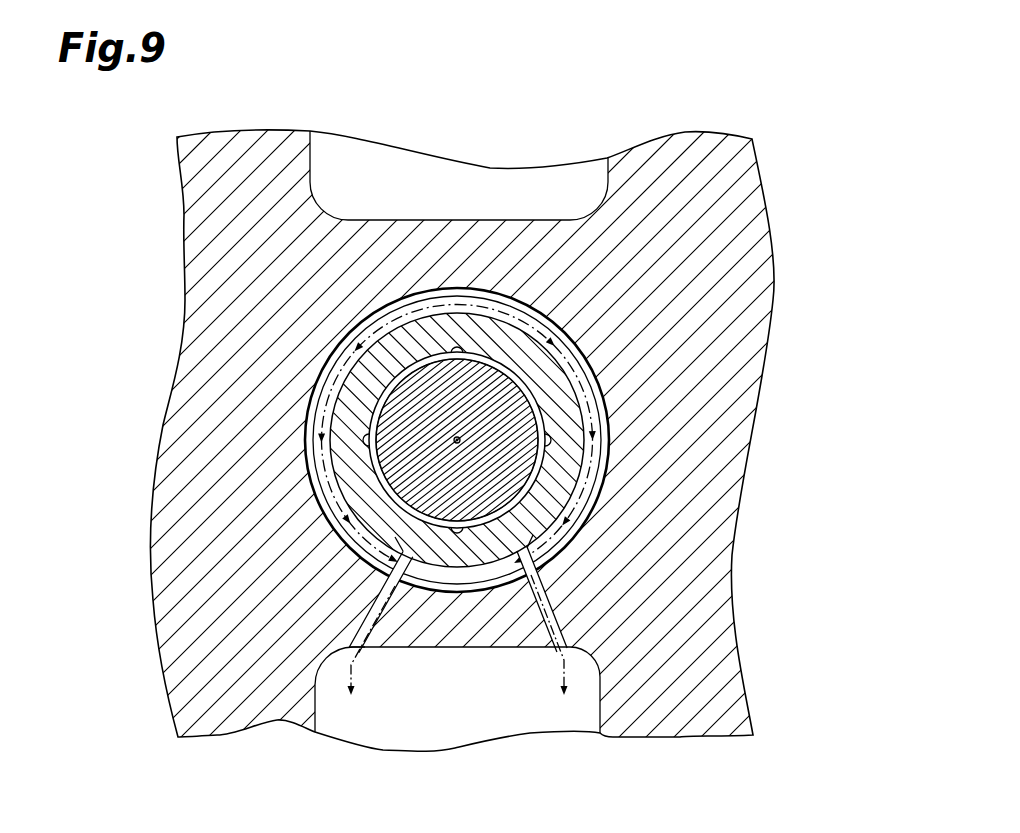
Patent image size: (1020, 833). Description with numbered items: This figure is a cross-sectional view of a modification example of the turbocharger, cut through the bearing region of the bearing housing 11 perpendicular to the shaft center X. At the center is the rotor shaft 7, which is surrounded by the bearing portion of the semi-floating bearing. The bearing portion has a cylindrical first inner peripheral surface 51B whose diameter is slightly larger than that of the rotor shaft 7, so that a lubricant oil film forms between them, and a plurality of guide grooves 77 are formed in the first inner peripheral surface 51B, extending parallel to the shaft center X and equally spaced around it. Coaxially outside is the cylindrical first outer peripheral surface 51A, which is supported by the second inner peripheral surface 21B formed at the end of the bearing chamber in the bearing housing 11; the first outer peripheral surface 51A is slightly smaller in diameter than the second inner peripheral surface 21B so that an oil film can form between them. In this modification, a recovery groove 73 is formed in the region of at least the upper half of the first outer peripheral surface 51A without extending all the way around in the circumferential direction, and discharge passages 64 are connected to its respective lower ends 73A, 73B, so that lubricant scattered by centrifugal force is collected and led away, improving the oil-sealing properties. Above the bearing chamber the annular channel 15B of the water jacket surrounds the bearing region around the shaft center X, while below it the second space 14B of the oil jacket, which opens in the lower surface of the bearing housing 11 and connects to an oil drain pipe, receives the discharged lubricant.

The bearing housing 11 is at (765, 192).
The annular channel 15B is at (442, 219).
The second space 14B is at (530, 649).
The recovery groove 73 is at (487, 294).
The lower end of recovery groove 73A is at (542, 559).
The lower end of recovery groove 73B is at (386, 585).
The rotor shaft 7 is at (378, 422).
The guide groove 77 is at (413, 427).
The shaft center X is at (459, 438).
The second inner peripheral surface 21B is at (591, 488).
The first inner peripheral surface 51B is at (400, 545).
The first outer peripheral surface 51A is at (545, 562).
The discharge passage 64 is at (385, 603).